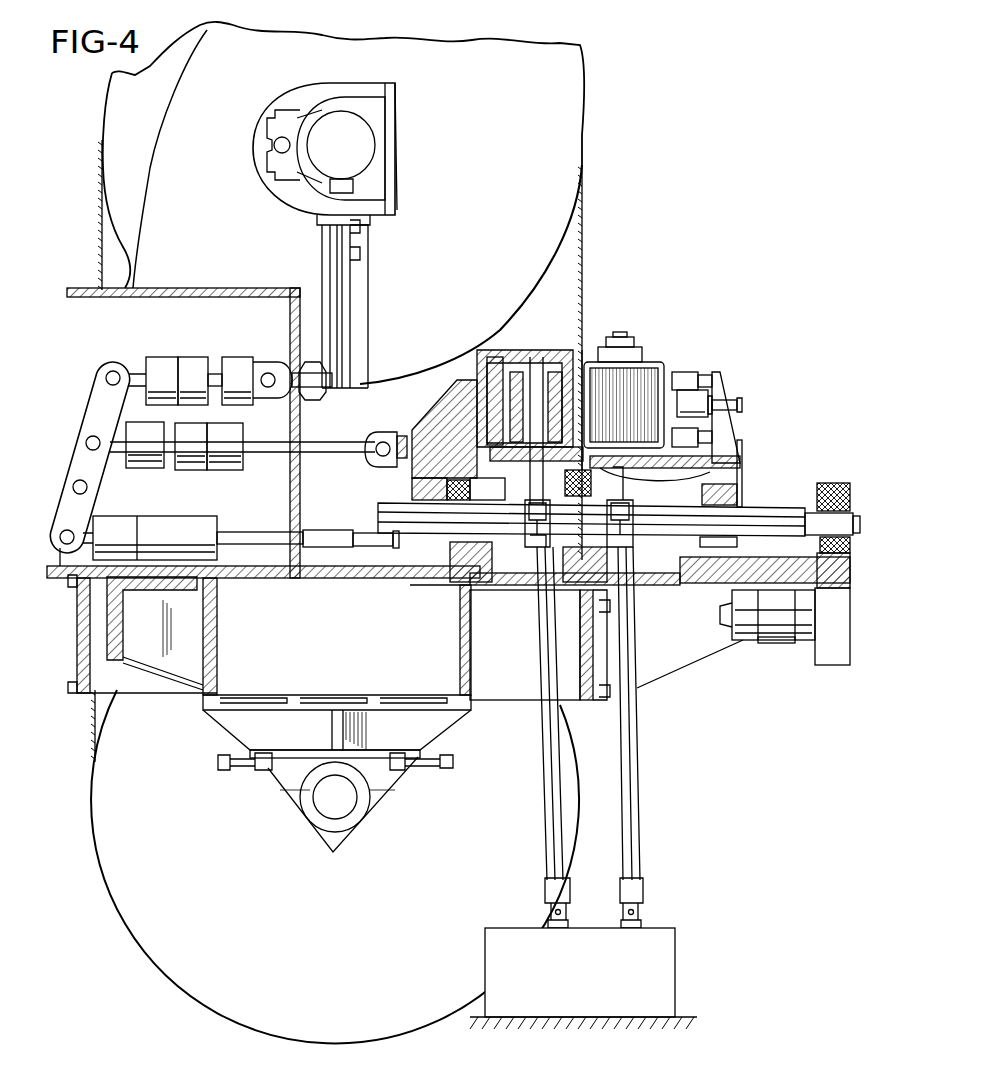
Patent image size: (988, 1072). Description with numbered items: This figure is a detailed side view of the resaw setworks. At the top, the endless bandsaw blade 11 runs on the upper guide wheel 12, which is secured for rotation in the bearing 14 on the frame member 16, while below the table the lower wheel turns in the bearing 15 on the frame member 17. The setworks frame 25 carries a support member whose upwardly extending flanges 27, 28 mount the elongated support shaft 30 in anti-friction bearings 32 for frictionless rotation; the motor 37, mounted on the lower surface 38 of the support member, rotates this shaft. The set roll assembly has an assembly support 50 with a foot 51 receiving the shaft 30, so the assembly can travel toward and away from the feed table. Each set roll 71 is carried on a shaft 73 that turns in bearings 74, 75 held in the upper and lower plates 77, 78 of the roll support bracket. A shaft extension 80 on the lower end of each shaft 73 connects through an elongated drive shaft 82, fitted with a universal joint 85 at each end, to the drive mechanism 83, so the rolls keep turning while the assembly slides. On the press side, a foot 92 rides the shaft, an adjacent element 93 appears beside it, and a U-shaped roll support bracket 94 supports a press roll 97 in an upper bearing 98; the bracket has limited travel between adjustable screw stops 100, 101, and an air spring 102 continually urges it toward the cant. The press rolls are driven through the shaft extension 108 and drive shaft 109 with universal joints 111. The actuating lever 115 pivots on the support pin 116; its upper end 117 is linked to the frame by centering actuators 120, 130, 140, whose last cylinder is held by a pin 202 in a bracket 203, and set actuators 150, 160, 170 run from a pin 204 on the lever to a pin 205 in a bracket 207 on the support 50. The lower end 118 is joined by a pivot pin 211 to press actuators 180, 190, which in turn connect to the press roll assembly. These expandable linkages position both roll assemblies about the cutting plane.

The endless bandsaw blade 11 is at (584, 232).
The upper guide wheel 12 is at (568, 124).
The bearing 14 is at (368, 150).
The bearing 15 is at (340, 830).
The frame member 16 is at (382, 116).
The frame member 17 is at (292, 784).
The setworks frame 25 is at (650, 676).
The upwardly extending flange 27 is at (450, 578).
The upwardly extending flange 28 is at (852, 505).
The elongated support shaft 30 is at (778, 516).
The anti-friction bearing 32 is at (456, 546).
The motor 37 is at (778, 643).
The lower surface of the support member 38 is at (735, 590).
The assembly support 50 is at (450, 392).
The foot 51 is at (398, 580).
The set roll 71 is at (586, 362).
The shaft 73 is at (545, 362).
The bearing 74 is at (522, 368).
The bearing 75 is at (492, 489).
The upper plate 77 is at (500, 358).
The lower plate 78 is at (440, 485).
The shaft extension 80 is at (533, 556).
The elongated drive shaft 82 is at (545, 795).
The drive mechanism 83 is at (662, 958).
The universal joint 85 is at (548, 558).
The foot 92 is at (725, 547).
The bearing block 93 is at (740, 487).
The U-shaped roll support bracket 94 is at (656, 358).
The press roll 97 is at (742, 460).
The upper bearing 98 is at (630, 332).
The adjustable screw stop 100 is at (692, 378).
The adjustable screw stop 101 is at (745, 405).
The air spring 102 is at (720, 383).
The shaft extension 108 is at (628, 490).
The drive shaft 109 is at (634, 770).
The universal joint 111 is at (627, 558).
The actuating lever 115 is at (103, 470).
The support pin 116 is at (72, 486).
The upper end of the actuator lever 117 is at (113, 362).
The lower end of the lever 118 is at (60, 562).
The centering actuator 120 is at (160, 372).
The centering actuator 130 is at (195, 372).
The centering actuator 140 is at (237, 372).
The set actuator 150 is at (152, 470).
The set actuator 160 is at (200, 472).
The set actuator 170 is at (228, 472).
The press actuator 180 is at (210, 580).
The press actuator 190 is at (136, 582).
The pin 202 is at (268, 388).
The bracket 203 is at (306, 402).
The pin 204 is at (86, 441).
The pin 205 is at (380, 455).
The bracket 207 is at (380, 432).
The pivot pin 211 is at (75, 533).